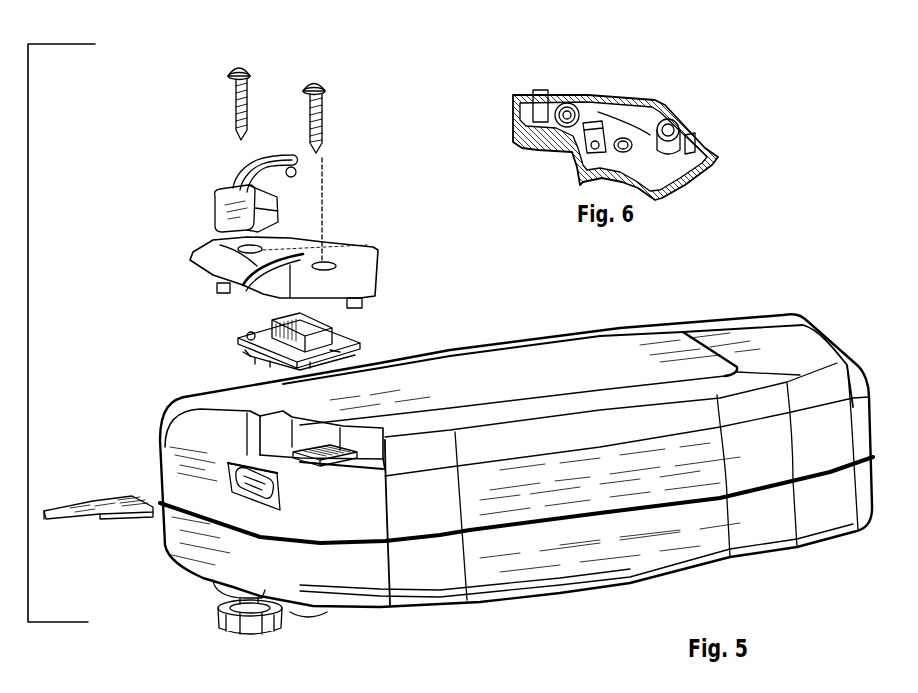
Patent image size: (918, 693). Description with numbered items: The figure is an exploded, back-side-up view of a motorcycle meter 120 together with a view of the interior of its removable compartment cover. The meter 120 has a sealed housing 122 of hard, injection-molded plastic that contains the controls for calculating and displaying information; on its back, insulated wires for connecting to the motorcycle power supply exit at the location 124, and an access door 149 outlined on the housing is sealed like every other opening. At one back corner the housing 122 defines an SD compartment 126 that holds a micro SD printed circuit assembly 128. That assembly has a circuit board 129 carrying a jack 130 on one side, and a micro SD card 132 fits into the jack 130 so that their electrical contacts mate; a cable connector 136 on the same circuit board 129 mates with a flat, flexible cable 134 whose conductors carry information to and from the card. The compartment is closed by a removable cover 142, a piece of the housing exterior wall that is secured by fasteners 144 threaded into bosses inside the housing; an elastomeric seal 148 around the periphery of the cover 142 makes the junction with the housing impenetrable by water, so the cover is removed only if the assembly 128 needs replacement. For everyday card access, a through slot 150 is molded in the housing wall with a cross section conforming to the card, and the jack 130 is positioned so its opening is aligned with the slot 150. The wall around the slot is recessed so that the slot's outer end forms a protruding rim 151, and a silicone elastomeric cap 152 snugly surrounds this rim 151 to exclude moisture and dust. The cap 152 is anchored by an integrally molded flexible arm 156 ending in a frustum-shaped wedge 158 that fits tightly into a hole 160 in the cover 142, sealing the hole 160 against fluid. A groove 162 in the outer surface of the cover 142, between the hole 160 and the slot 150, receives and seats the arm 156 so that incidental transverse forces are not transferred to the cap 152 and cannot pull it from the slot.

In FIG. 5, the motorcycle meter 120 is at (805, 302).
In FIG. 5, the sealed housing 122 is at (723, 317).
In FIG. 5, the wire exit location 124 is at (553, 410).
In FIG. 5, the SD compartment 126 is at (228, 425).
In FIG. 5, the micro SD printed circuit assembly 128 is at (228, 335).
In FIG. 5, the circuit board 129 is at (352, 340).
In FIG. 5, the jack 130 is at (250, 357).
In FIG. 5, the micro SD card 132 is at (93, 527).
In FIG. 5, the flat flexible cable 134 is at (383, 458).
In FIG. 5, the cable connector 136 is at (350, 317).
In FIG. 5, the removable cover 142 is at (287, 233).
In FIG. 6, the removable cover 142 is at (608, 103).
In FIG. 5, the fasteners 144 is at (250, 85).
In FIG. 6, the seal 148 is at (655, 98).
In FIG. 5, the access door 149 is at (587, 350).
In FIG. 5, the through slot 150 is at (230, 465).
In FIG. 5, the rim 151 is at (287, 488).
In FIG. 5, the elastomeric cap 152 is at (212, 210).
In FIG. 5, the flexible arm 156 is at (247, 167).
In FIG. 5, the frustum-shaped wedge 158 is at (298, 175).
In FIG. 6, the hole 160 is at (622, 138).
In FIG. 5, the groove 162 is at (200, 268).